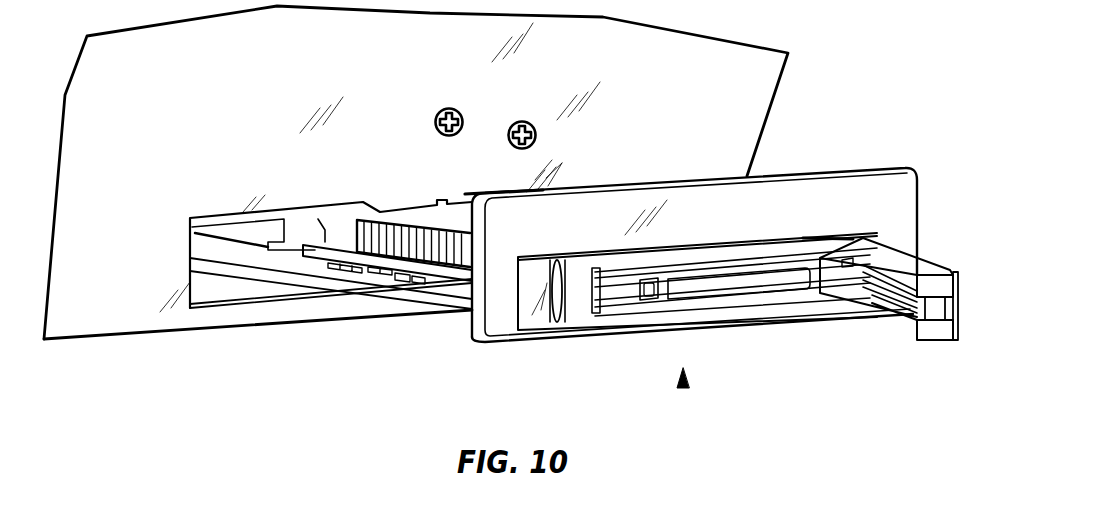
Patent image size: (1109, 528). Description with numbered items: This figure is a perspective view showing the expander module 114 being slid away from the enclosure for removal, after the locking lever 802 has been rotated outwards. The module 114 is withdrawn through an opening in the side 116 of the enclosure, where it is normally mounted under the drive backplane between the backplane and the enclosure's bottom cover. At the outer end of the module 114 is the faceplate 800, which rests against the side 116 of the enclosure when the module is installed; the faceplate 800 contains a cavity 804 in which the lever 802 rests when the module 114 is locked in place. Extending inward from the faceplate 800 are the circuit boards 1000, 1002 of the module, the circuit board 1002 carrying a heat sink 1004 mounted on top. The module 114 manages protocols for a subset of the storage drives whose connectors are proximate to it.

The side of the enclosure 116 is at (87, 318).
The circuit board 1000 is at (443, 298).
The circuit board 1002 is at (313, 253).
The heat sink 1004 is at (368, 255).
The faceplate 800 is at (508, 330).
The cavity 804 is at (585, 303).
The locking lever 802 is at (928, 338).
The expander module 114 is at (683, 386).